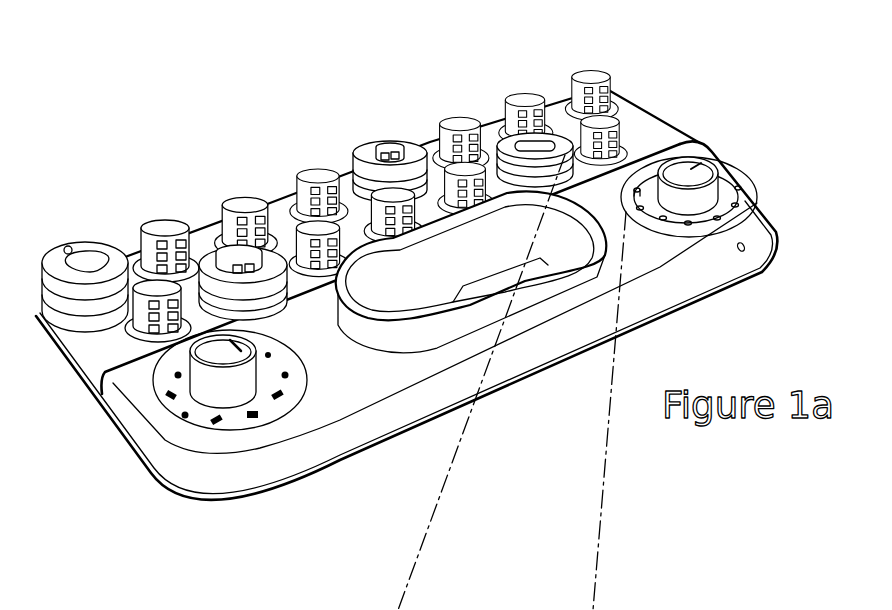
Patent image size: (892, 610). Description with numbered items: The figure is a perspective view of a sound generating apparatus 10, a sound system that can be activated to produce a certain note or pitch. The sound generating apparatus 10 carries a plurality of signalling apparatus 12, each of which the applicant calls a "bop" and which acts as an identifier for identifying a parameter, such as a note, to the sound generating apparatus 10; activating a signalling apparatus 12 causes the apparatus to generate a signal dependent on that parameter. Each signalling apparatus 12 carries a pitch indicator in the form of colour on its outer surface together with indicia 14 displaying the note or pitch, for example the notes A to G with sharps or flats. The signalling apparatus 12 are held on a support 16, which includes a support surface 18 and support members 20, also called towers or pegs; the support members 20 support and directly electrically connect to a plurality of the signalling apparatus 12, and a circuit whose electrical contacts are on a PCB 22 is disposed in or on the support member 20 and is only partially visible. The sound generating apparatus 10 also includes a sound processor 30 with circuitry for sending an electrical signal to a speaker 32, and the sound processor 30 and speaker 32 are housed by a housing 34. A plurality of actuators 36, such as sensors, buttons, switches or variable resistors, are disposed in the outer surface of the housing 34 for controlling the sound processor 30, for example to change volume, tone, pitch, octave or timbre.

The sound generating apparatus 10 is at (238, 148).
The signalling apparatus 12 is at (372, 152).
The indicia 14 is at (68, 248).
The support 16 is at (688, 141).
The support surface 18 is at (657, 128).
The support member 20 is at (619, 100).
The PCB 22 is at (567, 100).
The sound processor 30 is at (338, 398).
The speaker 32 is at (365, 290).
The housing 34 is at (313, 383).
The actuators 36 is at (690, 167).